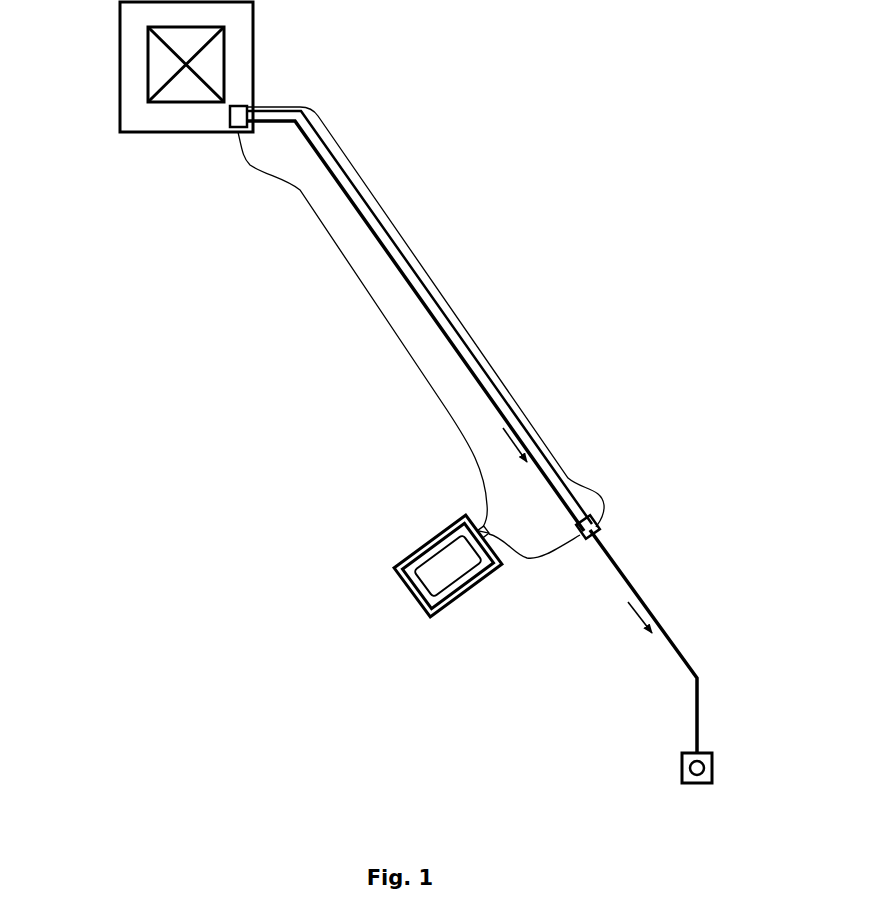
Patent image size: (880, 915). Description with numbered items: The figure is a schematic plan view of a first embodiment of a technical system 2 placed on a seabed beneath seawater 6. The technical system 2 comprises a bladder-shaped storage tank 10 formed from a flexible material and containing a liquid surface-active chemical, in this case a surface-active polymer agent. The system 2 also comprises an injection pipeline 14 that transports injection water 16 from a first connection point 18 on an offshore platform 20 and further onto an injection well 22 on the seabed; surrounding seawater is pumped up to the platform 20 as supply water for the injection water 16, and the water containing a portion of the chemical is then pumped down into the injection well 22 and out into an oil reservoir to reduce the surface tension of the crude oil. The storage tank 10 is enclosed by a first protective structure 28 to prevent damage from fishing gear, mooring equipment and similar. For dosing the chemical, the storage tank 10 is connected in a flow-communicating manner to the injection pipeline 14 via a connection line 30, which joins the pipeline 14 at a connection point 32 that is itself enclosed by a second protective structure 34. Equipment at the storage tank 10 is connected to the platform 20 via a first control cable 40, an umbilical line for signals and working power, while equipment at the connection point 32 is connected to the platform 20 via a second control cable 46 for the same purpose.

The technical system 2 is at (353, 575).
The seawater 6 is at (500, 195).
The bladder-shaped storage tank 10 is at (419, 594).
The injection pipeline 14 is at (271, 122).
The injection water 16 is at (503, 447).
The first connection point 18 is at (236, 105).
The offshore platform 20 is at (132, 15).
The injection well 22 is at (704, 768).
The first protective structure 28 is at (398, 582).
The connection line 30 is at (550, 555).
The connection point 32 is at (651, 486).
The second protective structure 34 is at (604, 528).
The first control cable 40 is at (244, 160).
The second control cable 46 is at (281, 106).